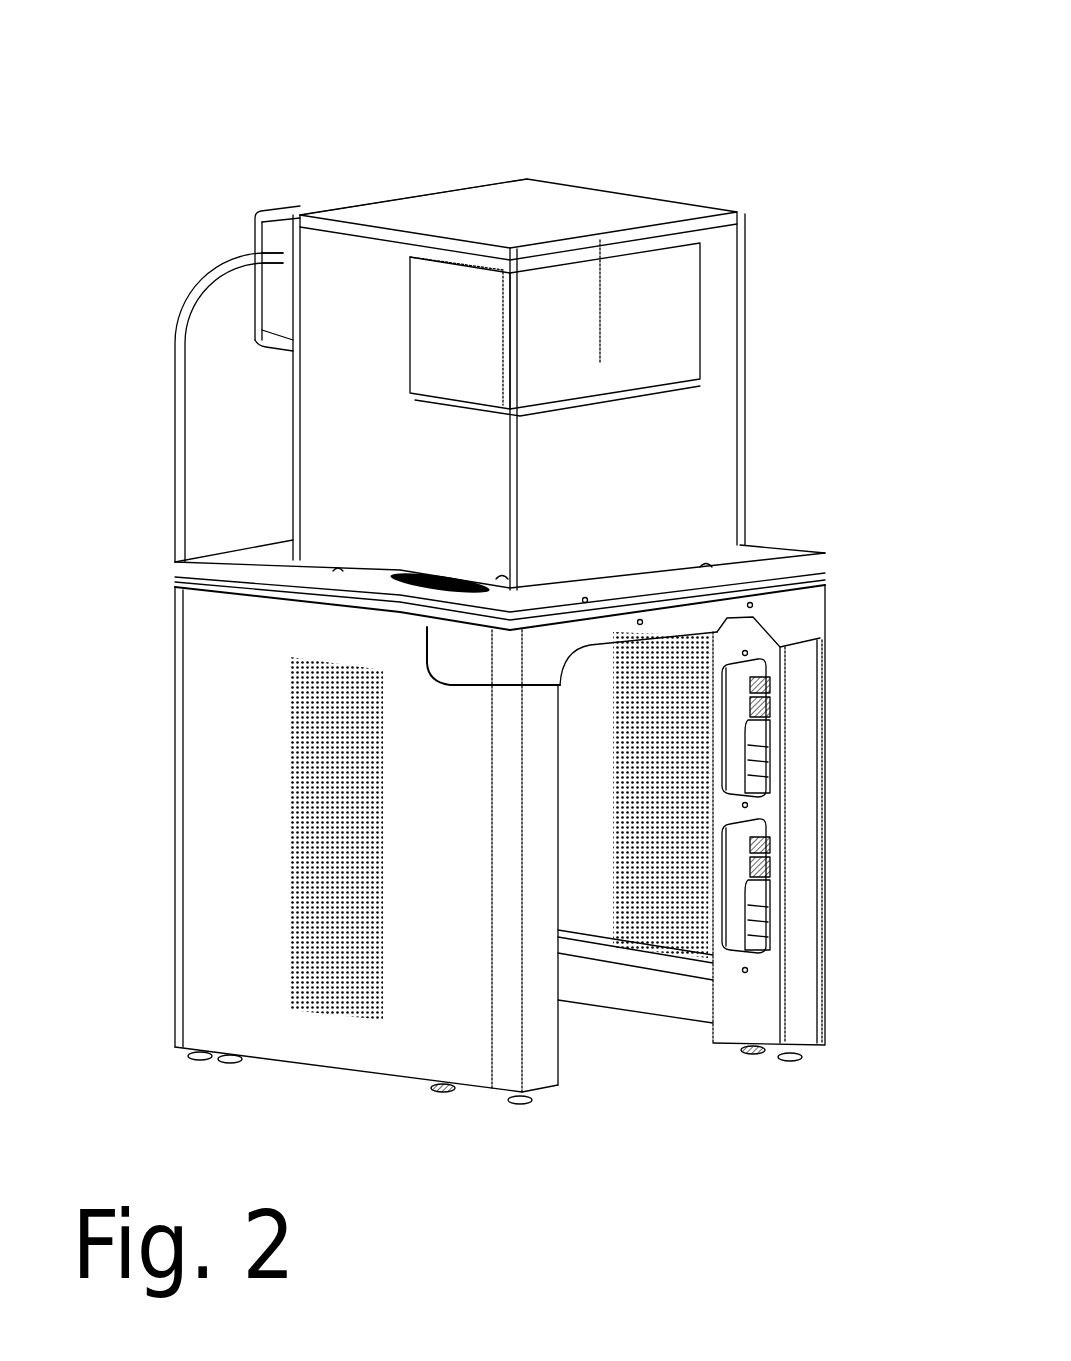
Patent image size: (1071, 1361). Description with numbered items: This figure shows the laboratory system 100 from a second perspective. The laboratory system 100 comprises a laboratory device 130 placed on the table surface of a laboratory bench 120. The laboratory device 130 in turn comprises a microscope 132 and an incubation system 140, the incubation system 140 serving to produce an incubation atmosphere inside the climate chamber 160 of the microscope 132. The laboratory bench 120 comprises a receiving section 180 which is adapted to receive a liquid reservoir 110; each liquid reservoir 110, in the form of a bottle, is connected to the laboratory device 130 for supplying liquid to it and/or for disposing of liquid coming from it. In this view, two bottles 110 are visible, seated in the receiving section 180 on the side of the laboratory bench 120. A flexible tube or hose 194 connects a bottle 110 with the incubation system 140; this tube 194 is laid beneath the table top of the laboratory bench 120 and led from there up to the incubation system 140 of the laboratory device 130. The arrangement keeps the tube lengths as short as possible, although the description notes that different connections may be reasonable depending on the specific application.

The laboratory system 100 is at (733, 108).
The liquid reservoir 110 is at (763, 750).
The laboratory bench 120 is at (207, 772).
The laboratory device 130 is at (705, 426).
The microscope 132 is at (533, 203).
The incubation system 140 is at (270, 242).
The climate chamber 160 is at (667, 278).
The receiving section 180 is at (733, 675).
The flexible tube 194 is at (178, 485).